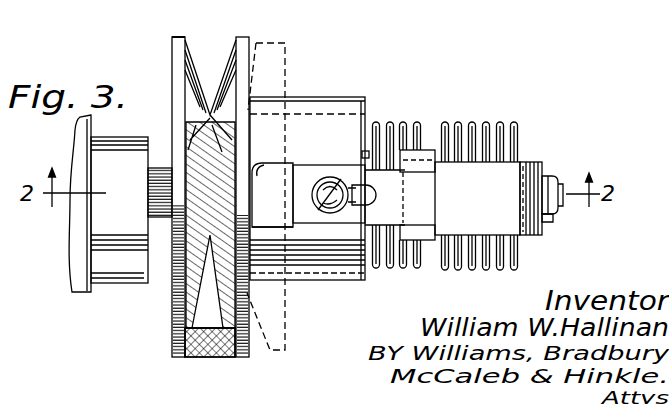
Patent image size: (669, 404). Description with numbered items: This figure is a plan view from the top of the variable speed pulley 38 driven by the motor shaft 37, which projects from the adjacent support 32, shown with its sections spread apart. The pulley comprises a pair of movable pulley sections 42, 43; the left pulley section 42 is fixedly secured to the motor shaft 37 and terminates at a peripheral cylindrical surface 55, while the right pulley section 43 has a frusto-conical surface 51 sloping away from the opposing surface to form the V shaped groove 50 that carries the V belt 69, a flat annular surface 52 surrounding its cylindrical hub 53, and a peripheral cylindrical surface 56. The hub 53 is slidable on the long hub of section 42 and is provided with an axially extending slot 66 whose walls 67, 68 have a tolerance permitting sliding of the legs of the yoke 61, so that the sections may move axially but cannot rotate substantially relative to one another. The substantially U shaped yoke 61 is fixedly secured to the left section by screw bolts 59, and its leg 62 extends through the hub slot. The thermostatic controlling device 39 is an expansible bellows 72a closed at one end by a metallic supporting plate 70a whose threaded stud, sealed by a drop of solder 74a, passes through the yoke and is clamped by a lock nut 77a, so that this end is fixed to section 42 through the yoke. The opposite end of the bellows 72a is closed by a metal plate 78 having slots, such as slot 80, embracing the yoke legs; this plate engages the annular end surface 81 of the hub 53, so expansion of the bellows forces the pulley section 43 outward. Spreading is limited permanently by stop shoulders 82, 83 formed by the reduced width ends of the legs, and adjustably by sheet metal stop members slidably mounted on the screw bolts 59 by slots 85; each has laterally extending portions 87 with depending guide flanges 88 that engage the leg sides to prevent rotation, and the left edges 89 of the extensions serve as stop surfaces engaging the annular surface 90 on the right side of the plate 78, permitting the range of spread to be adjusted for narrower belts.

The mounting bracket 32 is at (84, 157).
The motor shaft 37 is at (157, 180).
The variable speed pulley 38 is at (143, 280).
The thermostatic controlling device 39 is at (472, 266).
The pulley section 42 is at (149, 195).
The pulley section 43 is at (260, 178).
The V shaped groove 50 is at (169, 225).
The frusto-conical surface 51 is at (229, 59).
The flat annular surface 52 is at (252, 80).
The cylindrical hub 53 is at (333, 97).
The cylindrical surface 55 is at (178, 36).
The cylindrical surface 56 is at (239, 353).
The screw bolt 59 is at (327, 178).
The yoke 61 is at (470, 217).
The leg 62 is at (503, 222).
The axially extending slot 66 is at (282, 176).
The wall 67 is at (292, 112).
The wall 68 is at (283, 218).
The V belt 69 is at (197, 360).
The metallic supporting plate 70a is at (524, 138).
The bellows 72a is at (522, 120).
The drop of solder 74a is at (565, 194).
The lock nut 77a is at (580, 221).
The metal plate 78 is at (367, 155).
The slot 80 is at (410, 191).
The annular end surface 81 is at (373, 105).
The stop shoulder 82 is at (398, 124).
The stop shoulder 83 is at (400, 246).
The slot 85 is at (355, 202).
The laterally extending portion 87 is at (478, 123).
The guide flange 88 is at (443, 123).
The left edge 89 is at (391, 250).
The annular surface 90 is at (368, 113).